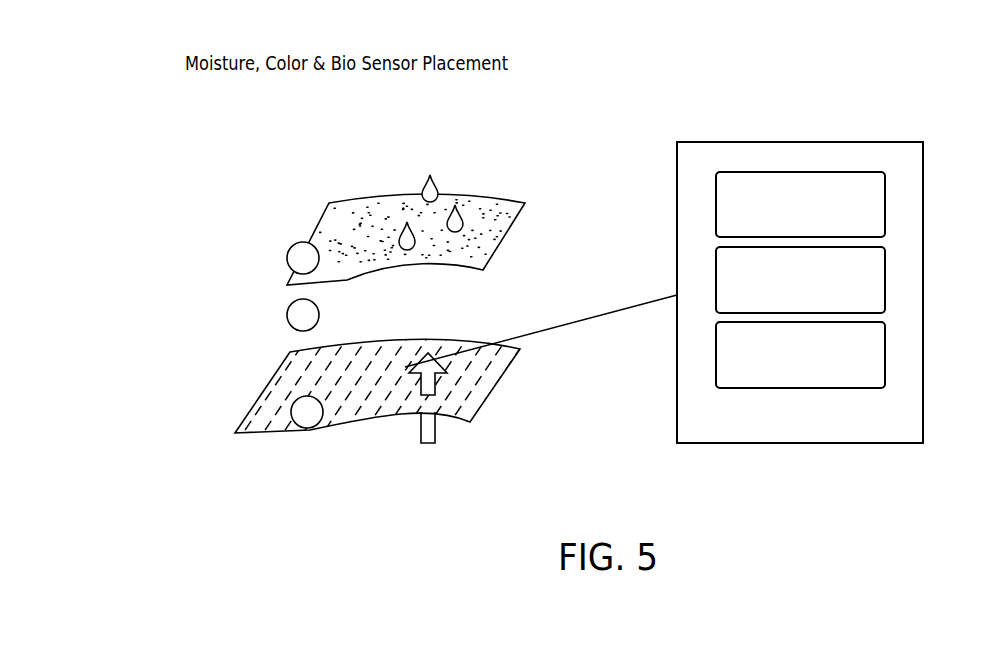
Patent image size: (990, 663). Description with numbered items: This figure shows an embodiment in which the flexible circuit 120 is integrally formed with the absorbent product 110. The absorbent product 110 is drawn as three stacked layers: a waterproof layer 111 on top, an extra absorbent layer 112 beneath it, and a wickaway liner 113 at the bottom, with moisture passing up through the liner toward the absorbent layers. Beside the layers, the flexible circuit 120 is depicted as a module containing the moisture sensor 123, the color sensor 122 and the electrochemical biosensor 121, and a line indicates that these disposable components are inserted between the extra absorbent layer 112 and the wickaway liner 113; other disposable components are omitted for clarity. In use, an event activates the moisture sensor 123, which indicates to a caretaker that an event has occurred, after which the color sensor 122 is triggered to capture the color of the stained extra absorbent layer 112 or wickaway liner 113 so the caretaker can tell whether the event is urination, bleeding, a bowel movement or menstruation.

The absorbent product 110 is at (333, 183).
The waterproof layer 111 is at (316, 228).
The extra absorbent layer 112 is at (272, 315).
The wickaway liner 113 is at (262, 394).
The flexible circuit 120 is at (923, 155).
The electrochemical biosensor 121 is at (887, 358).
The color sensor 122 is at (887, 283).
The moisture sensor 123 is at (887, 210).